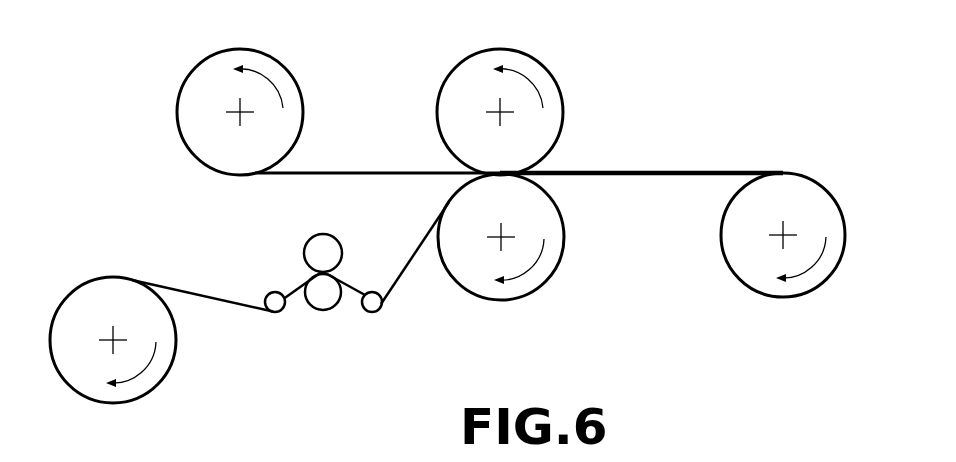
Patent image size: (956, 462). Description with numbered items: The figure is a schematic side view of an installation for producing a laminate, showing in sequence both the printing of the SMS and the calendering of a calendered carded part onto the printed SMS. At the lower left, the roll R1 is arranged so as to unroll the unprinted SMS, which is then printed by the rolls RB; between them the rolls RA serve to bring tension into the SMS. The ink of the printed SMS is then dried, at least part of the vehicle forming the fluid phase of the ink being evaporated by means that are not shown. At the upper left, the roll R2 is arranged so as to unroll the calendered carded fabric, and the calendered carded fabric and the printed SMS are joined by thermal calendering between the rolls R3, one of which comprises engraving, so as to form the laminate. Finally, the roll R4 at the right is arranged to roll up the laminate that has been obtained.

The roll R1 is at (80, 372).
The roll R2 is at (188, 100).
The rolls R3 is at (458, 82).
The roll R4 is at (745, 265).
The rolls RA is at (316, 250).
The rolls RB is at (272, 297).